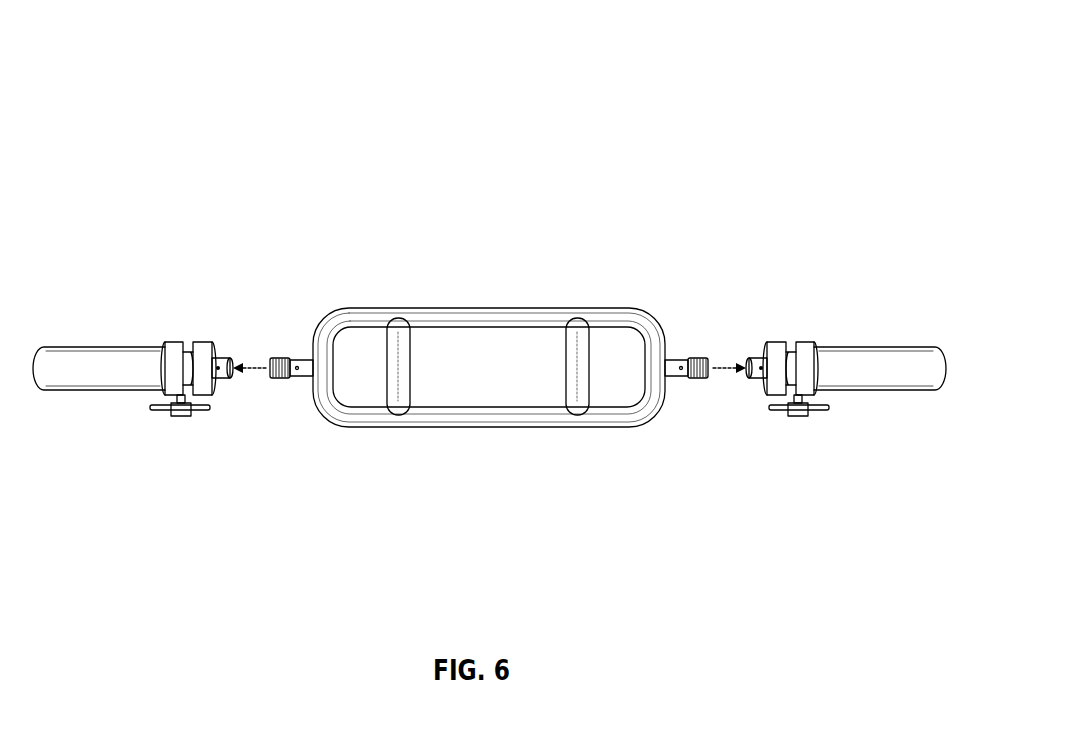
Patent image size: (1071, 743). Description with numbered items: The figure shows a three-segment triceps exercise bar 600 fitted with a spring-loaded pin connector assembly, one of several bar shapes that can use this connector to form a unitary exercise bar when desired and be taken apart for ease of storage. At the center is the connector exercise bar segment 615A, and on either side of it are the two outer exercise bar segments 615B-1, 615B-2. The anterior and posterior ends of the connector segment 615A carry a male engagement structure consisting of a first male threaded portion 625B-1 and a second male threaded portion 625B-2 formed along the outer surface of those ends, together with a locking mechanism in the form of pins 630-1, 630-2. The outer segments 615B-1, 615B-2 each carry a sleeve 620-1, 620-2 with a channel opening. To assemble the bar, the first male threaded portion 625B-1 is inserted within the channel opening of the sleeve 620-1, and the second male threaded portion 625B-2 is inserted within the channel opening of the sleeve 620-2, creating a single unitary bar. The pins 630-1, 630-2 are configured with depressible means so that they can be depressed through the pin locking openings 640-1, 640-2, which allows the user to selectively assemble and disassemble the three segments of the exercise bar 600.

The three-segment triceps exercise bar 600 is at (252, 55).
The connector exercise bar segment 615A is at (453, 421).
The exercise bar segment 615B-1 is at (83, 357).
The exercise bar segment 615B-2 is at (893, 357).
The sleeve 620-1 is at (223, 357).
The sleeve 620-2 is at (749, 357).
The first male threaded portion 625B-1 is at (282, 357).
The second male threaded portion 625B-2 is at (705, 357).
The pin 630-1 is at (282, 380).
The pin 630-2 is at (705, 380).
The pin locking opening 640-1 is at (222, 375).
The pin locking opening 640-2 is at (757, 375).